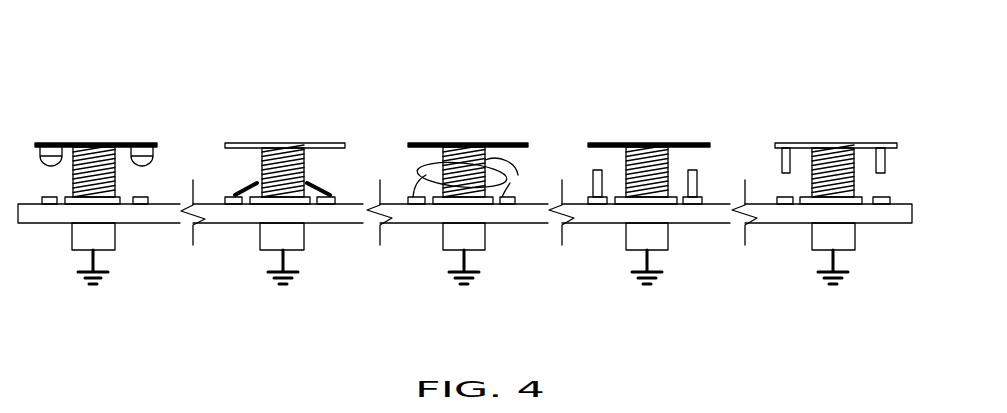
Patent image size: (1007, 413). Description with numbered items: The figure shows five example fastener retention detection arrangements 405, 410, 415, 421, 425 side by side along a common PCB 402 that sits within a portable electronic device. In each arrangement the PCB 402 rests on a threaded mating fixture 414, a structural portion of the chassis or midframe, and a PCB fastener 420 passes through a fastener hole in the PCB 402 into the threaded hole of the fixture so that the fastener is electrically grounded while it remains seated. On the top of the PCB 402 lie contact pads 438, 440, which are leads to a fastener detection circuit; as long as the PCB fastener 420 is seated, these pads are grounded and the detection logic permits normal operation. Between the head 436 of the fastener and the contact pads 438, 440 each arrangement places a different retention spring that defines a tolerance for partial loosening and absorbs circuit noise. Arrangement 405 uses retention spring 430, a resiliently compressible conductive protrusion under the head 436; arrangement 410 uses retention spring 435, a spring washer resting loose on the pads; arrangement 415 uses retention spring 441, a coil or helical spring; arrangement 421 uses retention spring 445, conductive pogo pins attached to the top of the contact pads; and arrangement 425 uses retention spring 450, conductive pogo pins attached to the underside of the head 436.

The PCB 402 is at (143, 213).
The fastener retention detection arrangement 405 is at (100, 113).
The fastener retention detection arrangement 410 is at (291, 113).
The fastener retention detection arrangement 415 is at (473, 113).
The fastener retention detection arrangement 421 is at (655, 113).
The fastener retention detection arrangement 425 is at (836, 113).
The threaded mating fixture 414 is at (105, 240).
The PCB fastener 420 is at (97, 178).
The retention spring 430 is at (157, 147).
The head 436 is at (50, 143).
The contact pad 438 is at (50, 200).
The retention spring 441 is at (150, 200).
The retention spring 435 is at (327, 193).
The contact pad 440 is at (518, 172).
The retention spring 445 is at (698, 178).
The retention spring 450 is at (886, 163).